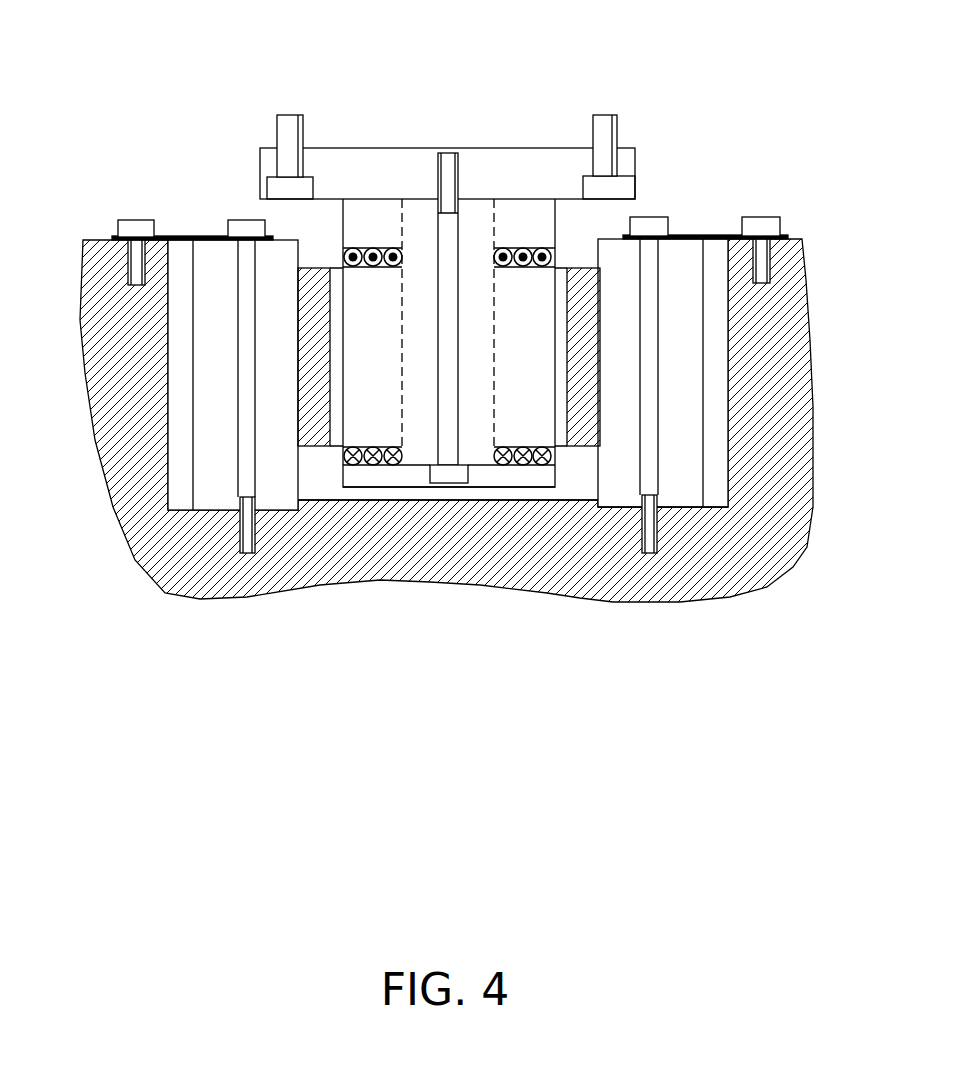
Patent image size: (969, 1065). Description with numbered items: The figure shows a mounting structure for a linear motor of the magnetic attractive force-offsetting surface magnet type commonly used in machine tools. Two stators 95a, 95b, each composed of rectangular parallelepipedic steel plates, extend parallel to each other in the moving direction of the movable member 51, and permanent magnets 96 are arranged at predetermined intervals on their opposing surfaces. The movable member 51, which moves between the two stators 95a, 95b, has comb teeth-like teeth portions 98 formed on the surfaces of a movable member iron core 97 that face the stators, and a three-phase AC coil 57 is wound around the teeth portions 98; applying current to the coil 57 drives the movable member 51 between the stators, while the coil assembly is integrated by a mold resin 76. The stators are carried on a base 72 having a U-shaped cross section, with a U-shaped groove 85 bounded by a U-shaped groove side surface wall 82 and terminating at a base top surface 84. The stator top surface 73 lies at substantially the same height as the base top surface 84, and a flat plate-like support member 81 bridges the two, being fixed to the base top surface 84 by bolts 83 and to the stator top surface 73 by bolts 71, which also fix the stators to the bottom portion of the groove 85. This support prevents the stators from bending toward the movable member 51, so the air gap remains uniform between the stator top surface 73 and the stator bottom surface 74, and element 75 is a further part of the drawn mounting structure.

The movable member 51 is at (390, 487).
The three-phase AC coil 57 is at (457, 213).
The bolts 71 is at (665, 237).
The base 72 is at (653, 583).
The stator top surface 73 is at (610, 237).
The stator bottom surface 74 is at (613, 513).
The upper plate 75 is at (380, 173).
The mold resin 76 is at (537, 473).
The plate-like support member 81 is at (717, 237).
The U-shaped groove side surface wall 82 is at (122, 383).
The bolts 83 is at (780, 237).
The base top surface 84 is at (98, 237).
The U-shaped groove 85 is at (717, 483).
The stator 95a is at (688, 450).
The stator 95b is at (223, 310).
The permanent magnets 96 is at (318, 290).
The movable member iron core 97 is at (479, 320).
The teeth portions 98 is at (532, 313).